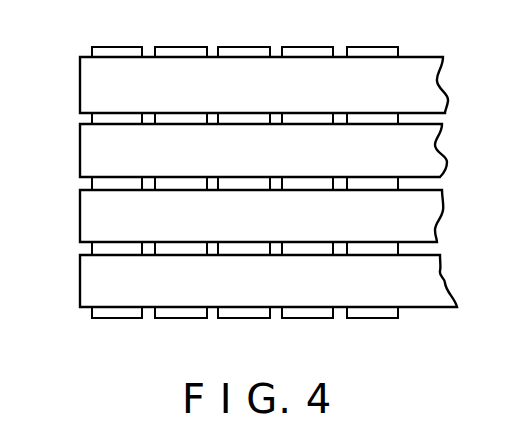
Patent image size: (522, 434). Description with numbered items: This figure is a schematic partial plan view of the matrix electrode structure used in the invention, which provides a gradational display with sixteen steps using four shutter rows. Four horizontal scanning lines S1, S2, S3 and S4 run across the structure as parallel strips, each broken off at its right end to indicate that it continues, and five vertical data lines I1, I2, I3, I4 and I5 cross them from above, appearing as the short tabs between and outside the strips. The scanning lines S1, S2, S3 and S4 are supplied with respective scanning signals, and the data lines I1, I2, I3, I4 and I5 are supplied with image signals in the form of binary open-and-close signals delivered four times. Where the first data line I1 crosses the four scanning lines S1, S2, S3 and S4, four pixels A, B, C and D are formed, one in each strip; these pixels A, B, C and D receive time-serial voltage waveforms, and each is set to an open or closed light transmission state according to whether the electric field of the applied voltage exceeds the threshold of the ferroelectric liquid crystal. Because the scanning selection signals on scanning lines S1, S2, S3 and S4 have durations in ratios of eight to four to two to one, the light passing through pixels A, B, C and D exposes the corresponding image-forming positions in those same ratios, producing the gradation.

The pixel A is at (264, 85).
The pixel B is at (263, 150).
The pixel C is at (261, 216).
The pixel D is at (268, 281).
The scanning line S1 is at (240, 85).
The scanning line S2 is at (239, 150).
The scanning line S3 is at (237, 217).
The scanning line S4 is at (244, 282).
The data line I1 is at (110, 7).
The data line I2 is at (180, 7).
The data line I3 is at (242, 7).
The data line I4 is at (305, 7).
The data line I5 is at (368, 7).